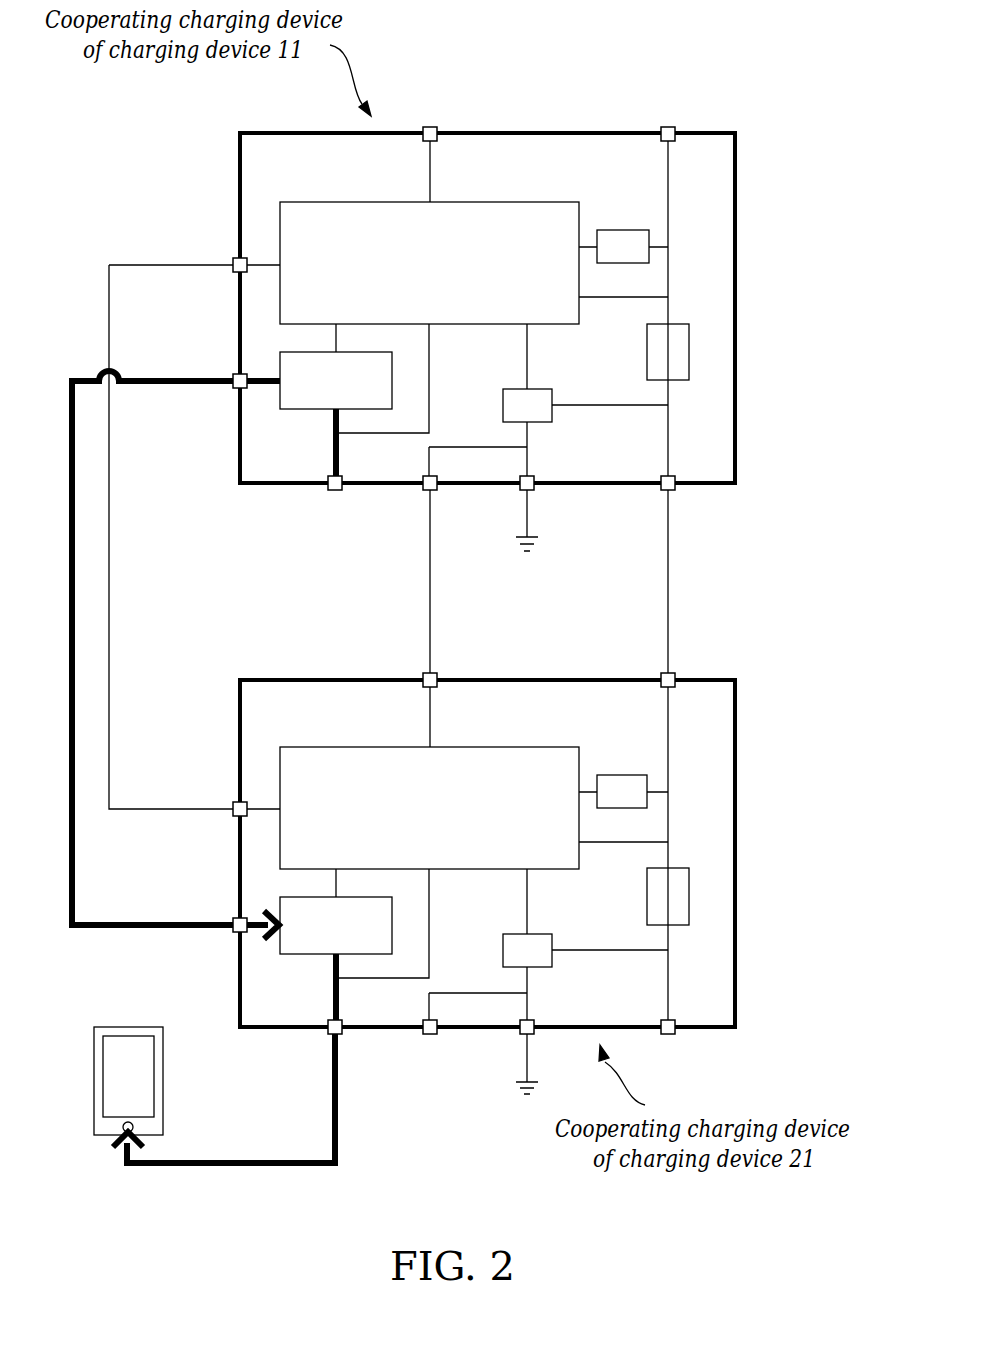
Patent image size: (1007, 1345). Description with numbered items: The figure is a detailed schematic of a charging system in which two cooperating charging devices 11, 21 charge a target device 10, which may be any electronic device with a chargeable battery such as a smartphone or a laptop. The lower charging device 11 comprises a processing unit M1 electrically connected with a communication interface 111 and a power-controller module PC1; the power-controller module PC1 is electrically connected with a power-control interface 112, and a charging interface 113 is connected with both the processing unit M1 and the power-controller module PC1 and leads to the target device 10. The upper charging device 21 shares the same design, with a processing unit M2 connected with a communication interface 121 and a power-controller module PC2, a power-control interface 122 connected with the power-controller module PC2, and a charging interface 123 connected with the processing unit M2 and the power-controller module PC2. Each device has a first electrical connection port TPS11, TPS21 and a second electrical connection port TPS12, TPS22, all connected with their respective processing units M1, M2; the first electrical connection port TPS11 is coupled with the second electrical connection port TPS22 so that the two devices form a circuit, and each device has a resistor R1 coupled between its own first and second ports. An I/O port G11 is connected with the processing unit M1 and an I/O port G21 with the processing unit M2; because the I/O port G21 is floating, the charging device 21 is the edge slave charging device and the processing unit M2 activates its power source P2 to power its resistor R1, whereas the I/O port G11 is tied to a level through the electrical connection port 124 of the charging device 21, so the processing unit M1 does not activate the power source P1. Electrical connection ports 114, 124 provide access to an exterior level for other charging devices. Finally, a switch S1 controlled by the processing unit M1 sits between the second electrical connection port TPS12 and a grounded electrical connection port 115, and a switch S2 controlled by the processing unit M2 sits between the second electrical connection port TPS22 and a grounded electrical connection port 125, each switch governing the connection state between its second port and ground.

The charging device 21 is at (768, 105).
The charging device 11 is at (768, 641).
The target device 10 is at (165, 1063).
The communication interface 121 is at (232, 272).
The power-control interface 122 is at (232, 389).
The charging interface 123 is at (328, 490).
The electrical connection port 124 is at (424, 490).
The electrical connection port 125 is at (521, 490).
The communication interface 111 is at (232, 816).
The power-control interface 112 is at (232, 932).
The charging interface 113 is at (328, 1034).
The electrical connection port 114 is at (424, 1034).
The electrical connection port 115 is at (521, 1034).
The I/O port G21 is at (515, 112).
The first electrical connection port TPS21 is at (661, 128).
The second electrical connection port TPS22 is at (780, 544).
The I/O port G11 is at (515, 657).
The first electrical connection port TPS11 is at (661, 674).
The second electrical connection port TPS12 is at (780, 1089).
The processing unit M2 is at (411, 276).
The processing unit M1 is at (411, 821).
The power-controller module PC2 is at (313, 392).
The power-controller module PC1 is at (313, 937).
The power source P2 is at (608, 259).
The power source P1 is at (607, 804).
The resistor R1 is at (651, 365).
The switch S2 is at (542, 418).
The switch S1 is at (542, 963).